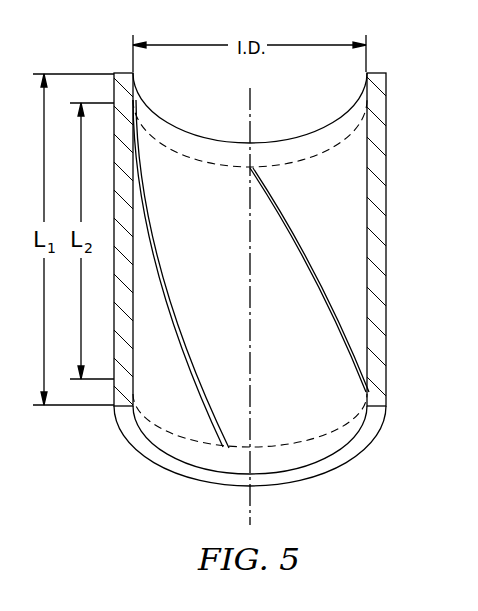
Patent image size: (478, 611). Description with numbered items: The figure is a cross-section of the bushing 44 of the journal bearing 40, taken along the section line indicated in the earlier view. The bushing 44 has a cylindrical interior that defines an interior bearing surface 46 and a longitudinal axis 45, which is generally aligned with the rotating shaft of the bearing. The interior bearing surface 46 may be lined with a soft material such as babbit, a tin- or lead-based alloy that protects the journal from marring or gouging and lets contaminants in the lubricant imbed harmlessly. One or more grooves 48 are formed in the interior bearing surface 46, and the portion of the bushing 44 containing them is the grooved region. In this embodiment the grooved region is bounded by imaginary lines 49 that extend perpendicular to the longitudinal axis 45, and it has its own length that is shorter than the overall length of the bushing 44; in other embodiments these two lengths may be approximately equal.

The journal bearing 40 is at (422, 306).
The bushing 44 is at (388, 142).
The longitudinal axis 45 is at (249, 503).
The interior bearing surface 46 is at (303, 391).
The grooves 48 is at (190, 357).
The imaginary lines 49 is at (186, 157).